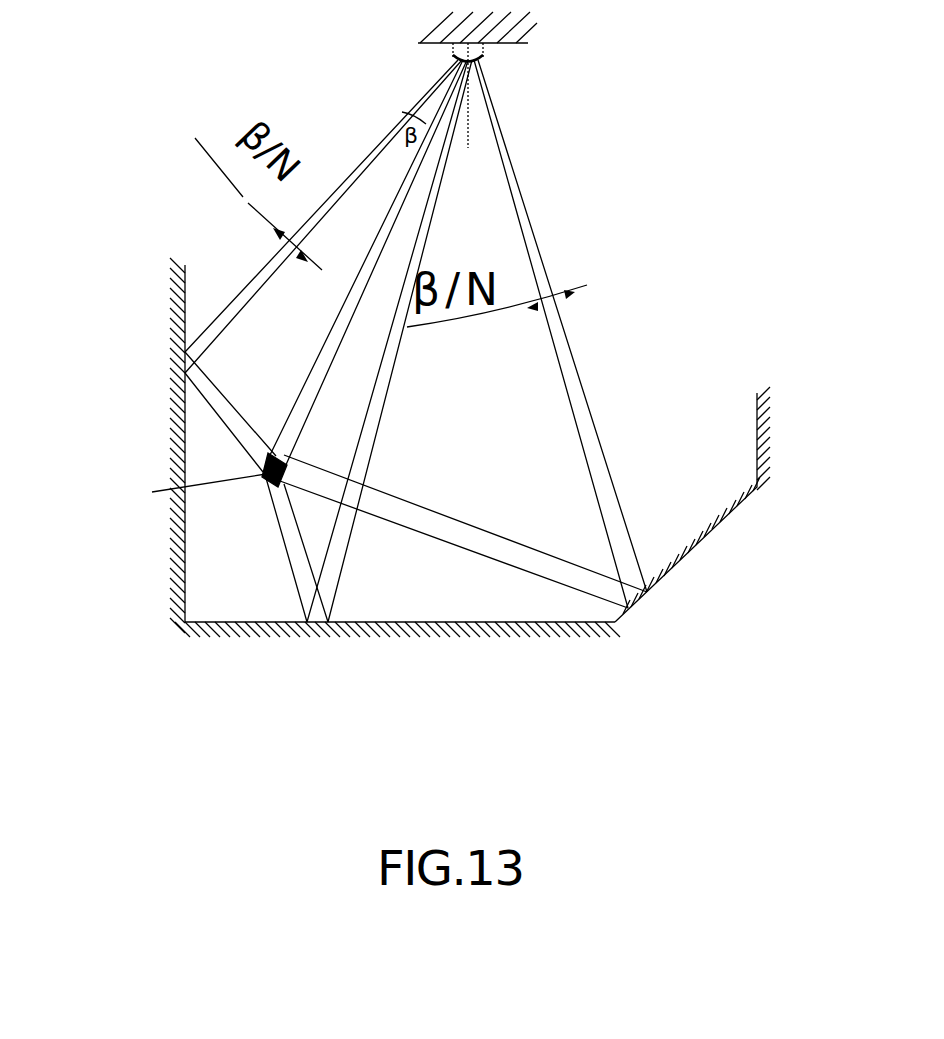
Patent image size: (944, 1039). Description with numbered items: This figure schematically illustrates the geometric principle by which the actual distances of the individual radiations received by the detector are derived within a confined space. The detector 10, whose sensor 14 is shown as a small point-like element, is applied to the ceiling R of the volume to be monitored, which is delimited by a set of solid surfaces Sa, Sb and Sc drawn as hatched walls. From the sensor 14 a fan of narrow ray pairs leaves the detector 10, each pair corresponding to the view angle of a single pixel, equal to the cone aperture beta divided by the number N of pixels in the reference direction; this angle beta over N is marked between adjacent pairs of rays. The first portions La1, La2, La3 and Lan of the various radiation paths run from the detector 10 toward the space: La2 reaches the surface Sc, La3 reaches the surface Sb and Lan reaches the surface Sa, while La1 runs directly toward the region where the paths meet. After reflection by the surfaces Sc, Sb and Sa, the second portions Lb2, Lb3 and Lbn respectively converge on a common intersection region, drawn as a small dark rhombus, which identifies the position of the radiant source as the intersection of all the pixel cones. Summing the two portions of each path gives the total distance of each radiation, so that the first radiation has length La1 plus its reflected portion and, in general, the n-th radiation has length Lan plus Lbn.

The sensor 14 is at (450, 59).
The detector 10 is at (497, 59).
The ceiling R is at (515, 43).
The solid surface Sa is at (700, 540).
The solid surface Sb is at (518, 625).
The solid surface Sc is at (187, 530).
The first path portion of radiation one La1 is at (368, 263).
The first path portion of radiation two La2 is at (323, 216).
The first path portion of radiation three La3 is at (389, 341).
The first path portion of radiation n Lan is at (560, 334).
The second path portion of radiation two Lb2 is at (214, 422).
The second path portion of radiation three Lb3 is at (277, 550).
The second path portion of radiation n Lbn is at (463, 531).